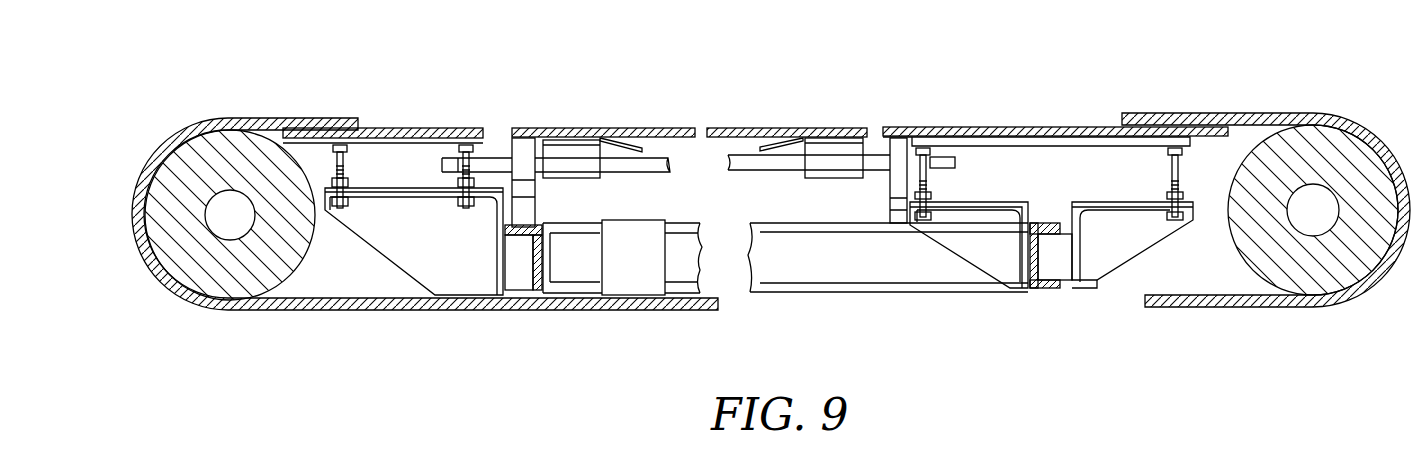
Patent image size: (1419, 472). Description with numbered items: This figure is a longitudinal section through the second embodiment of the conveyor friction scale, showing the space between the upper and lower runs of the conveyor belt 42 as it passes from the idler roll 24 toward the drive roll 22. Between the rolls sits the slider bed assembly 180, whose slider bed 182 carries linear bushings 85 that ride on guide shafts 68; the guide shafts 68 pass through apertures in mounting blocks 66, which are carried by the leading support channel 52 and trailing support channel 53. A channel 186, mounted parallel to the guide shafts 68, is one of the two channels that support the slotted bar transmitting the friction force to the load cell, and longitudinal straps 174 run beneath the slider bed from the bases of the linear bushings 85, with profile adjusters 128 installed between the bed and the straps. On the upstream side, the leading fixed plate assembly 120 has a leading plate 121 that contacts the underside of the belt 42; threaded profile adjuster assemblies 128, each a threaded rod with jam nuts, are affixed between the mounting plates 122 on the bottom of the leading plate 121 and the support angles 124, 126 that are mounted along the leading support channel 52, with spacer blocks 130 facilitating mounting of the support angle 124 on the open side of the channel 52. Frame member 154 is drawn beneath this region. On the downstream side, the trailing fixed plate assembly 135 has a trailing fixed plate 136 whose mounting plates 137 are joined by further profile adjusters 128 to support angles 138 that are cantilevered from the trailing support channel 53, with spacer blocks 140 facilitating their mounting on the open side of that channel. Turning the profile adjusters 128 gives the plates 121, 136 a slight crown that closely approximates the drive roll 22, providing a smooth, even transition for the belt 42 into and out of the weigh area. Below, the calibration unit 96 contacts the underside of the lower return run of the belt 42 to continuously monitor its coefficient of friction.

The conveyor belt 42 is at (230, 118).
The drive roll 22 is at (215, 258).
The idler roll 24 is at (1340, 262).
The trailing fixed plate 136 is at (418, 130).
The mounting plates 137 is at (378, 141).
The trailing fixed plate assembly 135 is at (470, 120).
The slider bed assembly 180 is at (672, 115).
The slider bed 182 is at (810, 126).
The leading plate 121 is at (980, 126).
The mounting plates 122 is at (1063, 145).
The leading fixed plate assembly 120 is at (952, 120).
The profile adjuster assemblies 128 is at (446, 158).
The support angles 138 is at (472, 265).
The spacer blocks 140 is at (522, 270).
The mounting blocks 66 is at (522, 150).
The linear bushings 85 is at (585, 157).
The channel 186 is at (630, 173).
The guide shafts 68 is at (777, 172).
The longitudinal straps 174 is at (648, 142).
The trailing support channel 53 is at (538, 280).
The calibration unit 96 is at (638, 278).
The frame member 154 is at (810, 292).
The support angle 126 is at (998, 252).
The leading support channel 52 is at (1045, 292).
The spacer blocks 130 is at (1053, 247).
The support angle 124 is at (1107, 242).